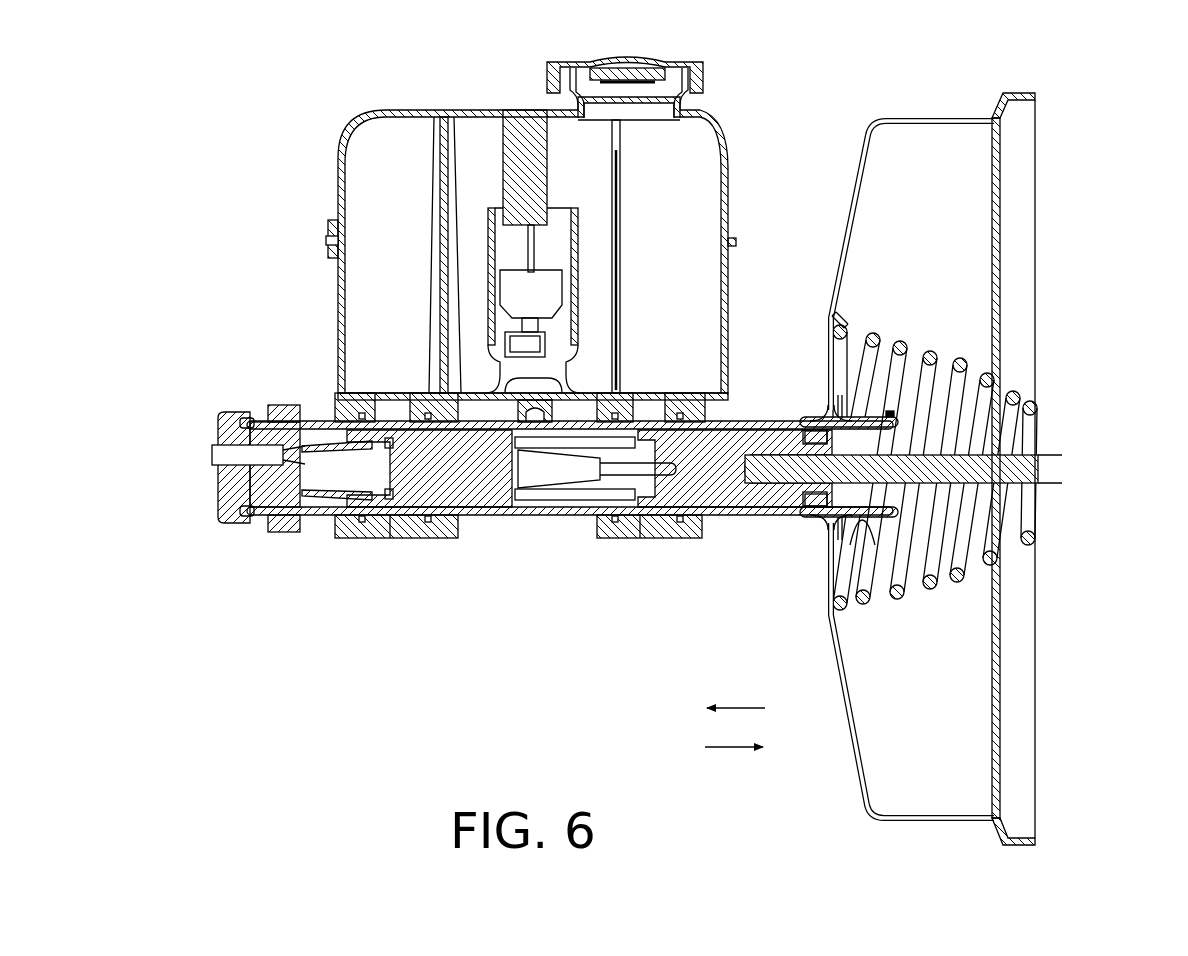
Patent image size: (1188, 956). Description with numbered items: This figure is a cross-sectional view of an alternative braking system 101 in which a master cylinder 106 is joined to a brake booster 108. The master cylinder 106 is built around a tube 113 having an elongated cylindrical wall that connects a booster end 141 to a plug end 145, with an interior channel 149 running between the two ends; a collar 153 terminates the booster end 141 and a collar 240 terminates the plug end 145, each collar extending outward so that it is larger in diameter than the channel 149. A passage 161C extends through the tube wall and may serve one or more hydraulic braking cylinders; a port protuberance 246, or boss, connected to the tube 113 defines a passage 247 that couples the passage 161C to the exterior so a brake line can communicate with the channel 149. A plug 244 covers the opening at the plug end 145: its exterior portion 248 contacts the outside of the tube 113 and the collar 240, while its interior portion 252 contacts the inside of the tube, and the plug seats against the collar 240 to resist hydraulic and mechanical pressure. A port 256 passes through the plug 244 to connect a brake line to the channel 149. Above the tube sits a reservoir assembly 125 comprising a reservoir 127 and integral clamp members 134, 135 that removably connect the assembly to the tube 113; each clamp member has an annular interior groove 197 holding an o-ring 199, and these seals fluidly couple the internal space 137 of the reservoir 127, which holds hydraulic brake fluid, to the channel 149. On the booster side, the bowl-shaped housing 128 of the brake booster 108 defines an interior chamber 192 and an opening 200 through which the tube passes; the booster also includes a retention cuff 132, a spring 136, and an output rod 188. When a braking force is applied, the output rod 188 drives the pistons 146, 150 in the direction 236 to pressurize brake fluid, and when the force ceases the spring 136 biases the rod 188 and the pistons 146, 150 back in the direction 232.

The braking system 101 is at (1100, 140).
The master cylinder 106 is at (176, 150).
The brake booster 108 is at (928, 104).
The tube 113 is at (758, 420).
The reservoir assembly 125 is at (318, 240).
The reservoir 127 is at (412, 108).
The housing 128 is at (850, 198).
The retention cuff 132 is at (840, 318).
The clamp member 134 is at (470, 527).
The clamp member 135 is at (648, 540).
The spring 136 is at (898, 340).
The internal space 137 is at (400, 192).
The booster end 141 is at (853, 530).
The plug end 145 is at (288, 530).
The piston 146 is at (535, 468).
The interior channel 149 is at (375, 522).
The piston 150 is at (707, 482).
The collar 153 is at (884, 560).
The passage 161C is at (395, 496).
The output rod 188 is at (1040, 470).
The interior chamber 192 is at (915, 217).
The annular interior groove 197 is at (430, 416).
The o-ring 199 is at (345, 524).
The passage/opening 200 is at (777, 527).
The direction 232 is at (727, 747).
The direction 236 is at (735, 708).
The collar 240 is at (243, 530).
The plug 244 is at (222, 428).
The port protuberance 246 is at (508, 412).
The passage 247 is at (560, 426).
The exterior portion 248 is at (283, 404).
The interior portion 252 is at (228, 500).
The port 256 is at (214, 458).